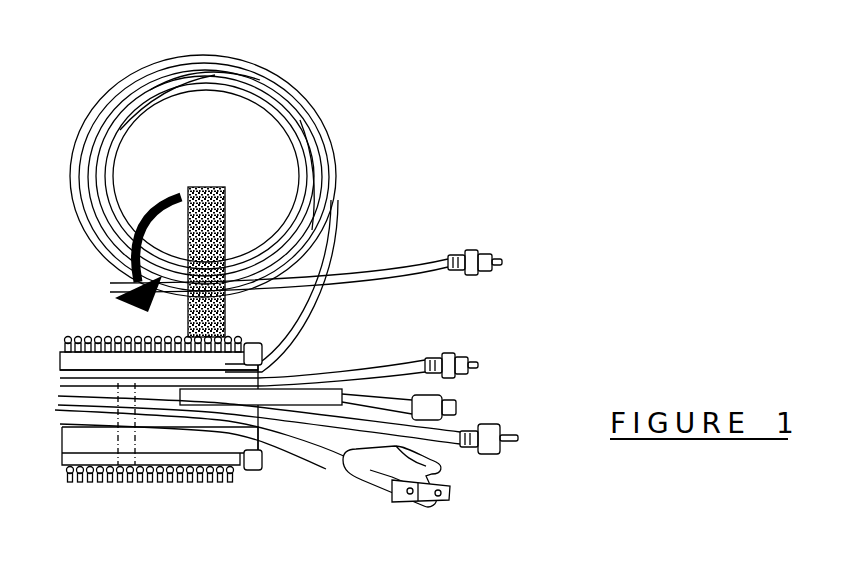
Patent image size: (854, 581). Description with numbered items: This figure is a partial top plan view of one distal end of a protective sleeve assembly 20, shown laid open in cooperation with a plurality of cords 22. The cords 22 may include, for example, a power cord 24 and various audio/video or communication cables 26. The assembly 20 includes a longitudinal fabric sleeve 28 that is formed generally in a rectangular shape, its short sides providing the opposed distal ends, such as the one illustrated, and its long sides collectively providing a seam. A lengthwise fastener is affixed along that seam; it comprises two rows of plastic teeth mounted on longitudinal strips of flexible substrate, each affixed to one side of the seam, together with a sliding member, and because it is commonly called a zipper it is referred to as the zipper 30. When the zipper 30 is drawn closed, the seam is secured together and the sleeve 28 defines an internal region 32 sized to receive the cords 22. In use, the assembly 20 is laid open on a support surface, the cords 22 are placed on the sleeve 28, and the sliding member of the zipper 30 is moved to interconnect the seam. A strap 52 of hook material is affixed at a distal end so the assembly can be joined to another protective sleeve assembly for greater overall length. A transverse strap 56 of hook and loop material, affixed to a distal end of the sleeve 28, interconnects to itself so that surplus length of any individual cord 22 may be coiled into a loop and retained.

The protective sleeve assembly 20 is at (338, 70).
The cords 22 is at (341, 441).
The power cord 24 is at (320, 465).
The audio/video or communication cables 26 is at (387, 363).
The fabric sleeve 28 is at (95, 442).
The zipper 30 is at (103, 458).
The internal region 32 is at (205, 433).
The strap 52 is at (443, 388).
The transverse strap 56 is at (223, 206).